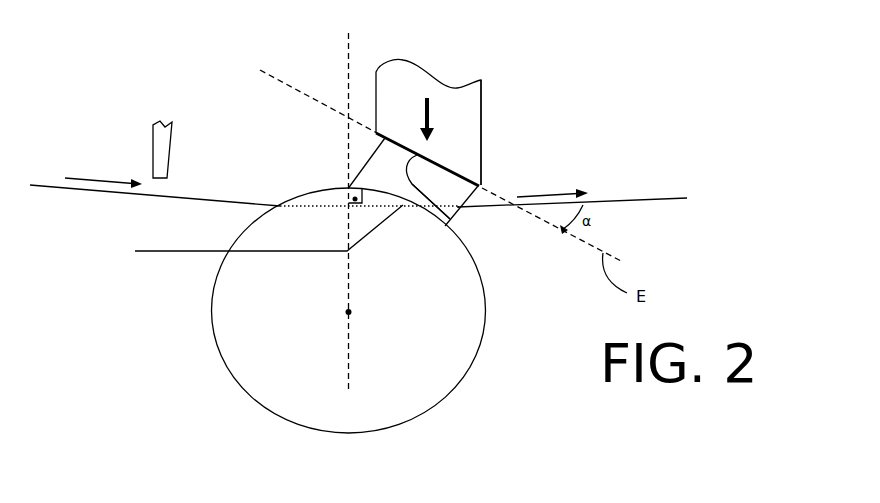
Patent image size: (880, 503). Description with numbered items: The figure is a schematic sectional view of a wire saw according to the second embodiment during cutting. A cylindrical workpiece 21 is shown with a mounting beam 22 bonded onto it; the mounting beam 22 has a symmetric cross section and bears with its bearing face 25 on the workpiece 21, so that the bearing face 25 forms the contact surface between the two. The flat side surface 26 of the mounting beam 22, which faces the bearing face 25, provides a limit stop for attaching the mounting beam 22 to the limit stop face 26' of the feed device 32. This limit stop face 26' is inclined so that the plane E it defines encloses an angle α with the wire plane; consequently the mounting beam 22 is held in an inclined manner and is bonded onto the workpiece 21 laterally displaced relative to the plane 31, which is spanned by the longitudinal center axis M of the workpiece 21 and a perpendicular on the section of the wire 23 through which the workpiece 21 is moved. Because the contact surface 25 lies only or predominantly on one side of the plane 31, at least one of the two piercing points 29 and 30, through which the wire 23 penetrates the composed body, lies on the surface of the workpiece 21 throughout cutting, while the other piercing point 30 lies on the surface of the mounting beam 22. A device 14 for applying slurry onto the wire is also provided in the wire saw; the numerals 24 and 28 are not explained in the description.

The device for applying slurry 14 is at (152, 135).
The workpiece 21 is at (410, 352).
The mounting beam 22 is at (393, 162).
The wire 23 is at (618, 198).
The tool movement direction 24 is at (438, 119).
The bearing face 25 is at (257, 233).
The side surface 26 is at (467, 172).
The limit stop face 26' is at (473, 225).
The incoming web 28 is at (105, 178).
The piercing point 29 is at (275, 207).
The piercing point 30 is at (458, 207).
The plane 31 is at (348, 352).
The feed device 32 is at (482, 88).